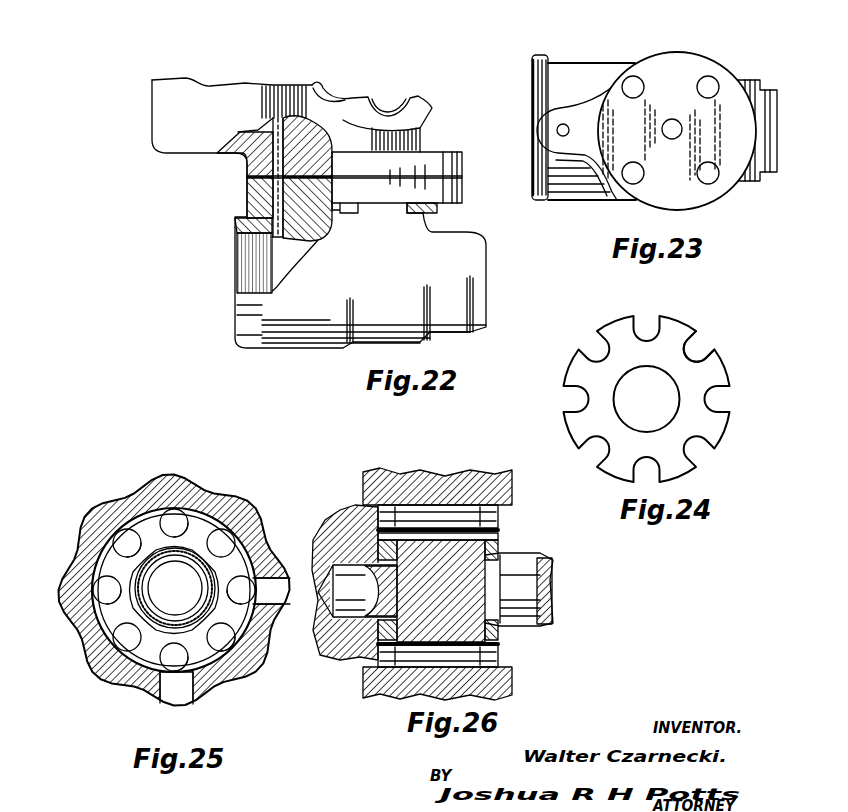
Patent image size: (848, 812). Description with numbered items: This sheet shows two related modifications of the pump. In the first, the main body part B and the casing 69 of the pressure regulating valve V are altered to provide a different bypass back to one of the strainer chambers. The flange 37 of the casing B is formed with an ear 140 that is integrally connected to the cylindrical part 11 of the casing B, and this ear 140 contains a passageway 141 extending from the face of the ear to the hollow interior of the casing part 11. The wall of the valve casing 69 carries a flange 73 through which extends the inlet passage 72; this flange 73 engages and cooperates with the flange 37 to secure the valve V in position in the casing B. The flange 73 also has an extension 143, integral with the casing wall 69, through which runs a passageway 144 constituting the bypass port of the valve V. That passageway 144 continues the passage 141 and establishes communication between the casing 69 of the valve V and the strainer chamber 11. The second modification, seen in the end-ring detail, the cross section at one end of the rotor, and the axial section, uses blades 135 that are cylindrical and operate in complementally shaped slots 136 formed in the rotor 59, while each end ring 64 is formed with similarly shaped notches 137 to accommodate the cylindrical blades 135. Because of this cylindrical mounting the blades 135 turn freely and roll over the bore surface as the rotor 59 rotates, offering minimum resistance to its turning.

In FIG. 22, the cylindrical part of the casing 11 is at (170, 118).
In FIG. 22, the main body part B is at (275, 74).
In FIG. 22, the pressure regulating valve V is at (224, 350).
In FIG. 23, the pressure regulating valve V is at (577, 200).
In FIG. 23, the flange 37 is at (478, 128).
In FIG. 25, the rotor 59 is at (148, 657).
In FIG. 26, the rotor 59 is at (436, 555).
In FIG. 24, the end ring 64 is at (716, 428).
In FIG. 25, the end ring 64 is at (240, 660).
In FIG. 26, the end ring 64 is at (385, 545).
In FIG. 22, the casing 69 is at (303, 337).
In FIG. 23, the casing 69 is at (587, 73).
In FIG. 23, the passageway 72 is at (671, 124).
In FIG. 22, the flange 73 is at (450, 192).
In FIG. 23, the flange 73 is at (683, 60).
In FIG. 25, the cylindrical blades 135 is at (182, 515).
In FIG. 26, the cylindrical blades 135 is at (500, 517).
In FIG. 25, the slots 136 is at (112, 618).
In FIG. 26, the slots 136 is at (478, 536).
In FIG. 24, the notches 137 is at (698, 352).
In FIG. 22, the ear 140 is at (262, 167).
In FIG. 22, the passageway 141 is at (282, 155).
In FIG. 22, the extension 143 is at (256, 192).
In FIG. 23, the extension 143 is at (553, 120).
In FIG. 22, the passageway 144 is at (244, 218).
In FIG. 23, the passageway 144 is at (559, 133).